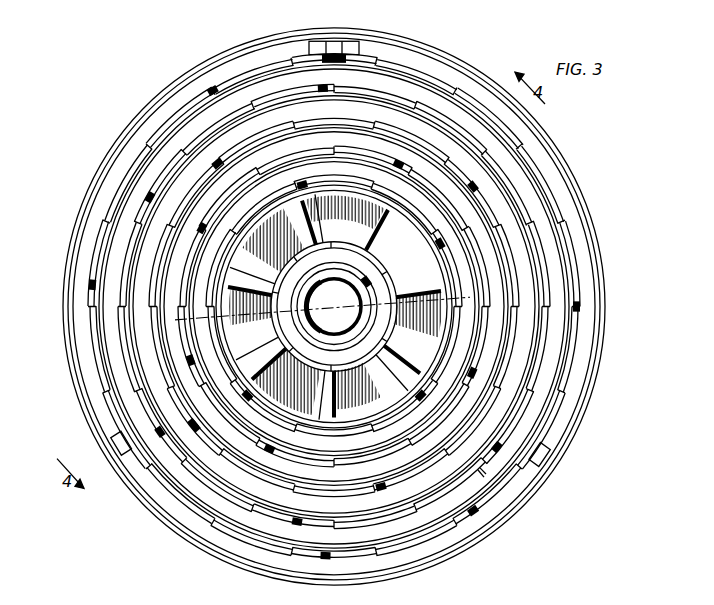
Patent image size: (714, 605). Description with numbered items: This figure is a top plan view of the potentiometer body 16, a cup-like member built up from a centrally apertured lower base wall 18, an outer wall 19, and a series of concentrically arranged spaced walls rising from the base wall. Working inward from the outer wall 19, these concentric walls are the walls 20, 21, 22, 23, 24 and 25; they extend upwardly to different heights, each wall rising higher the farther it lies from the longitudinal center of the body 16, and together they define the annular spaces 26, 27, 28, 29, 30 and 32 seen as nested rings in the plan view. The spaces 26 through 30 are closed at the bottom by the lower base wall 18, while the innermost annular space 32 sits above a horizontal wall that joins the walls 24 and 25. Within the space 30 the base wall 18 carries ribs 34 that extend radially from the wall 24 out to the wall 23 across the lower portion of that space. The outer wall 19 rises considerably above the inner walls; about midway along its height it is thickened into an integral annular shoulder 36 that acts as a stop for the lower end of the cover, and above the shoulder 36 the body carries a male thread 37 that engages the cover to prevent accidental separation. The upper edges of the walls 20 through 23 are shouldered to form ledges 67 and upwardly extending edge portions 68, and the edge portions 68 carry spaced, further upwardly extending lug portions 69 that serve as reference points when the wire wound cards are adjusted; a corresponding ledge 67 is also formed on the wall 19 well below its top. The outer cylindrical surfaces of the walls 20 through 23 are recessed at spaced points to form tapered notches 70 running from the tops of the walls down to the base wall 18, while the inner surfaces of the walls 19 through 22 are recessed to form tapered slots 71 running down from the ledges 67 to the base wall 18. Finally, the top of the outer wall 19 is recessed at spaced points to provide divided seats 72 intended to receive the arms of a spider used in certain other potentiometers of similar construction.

The body 16 is at (270, 54).
The lower base wall 18 is at (334, 312).
The outer wall 19 is at (373, 279).
The concentric wall 20 is at (372, 307).
The concentric wall 21 is at (378, 306).
The concentric wall 22 is at (340, 306).
The concentric wall 23 is at (364, 295).
The concentric wall 24 is at (358, 305).
The concentric wall 25 is at (356, 281).
The annular space 26 is at (369, 306).
The annular space 27 is at (364, 306).
The annular space 28 is at (354, 306).
The annular space 29 is at (349, 307).
The annular space 30 is at (354, 305).
The annular space 32 is at (334, 309).
The ribs 34 is at (319, 306).
The annular shoulder 36 is at (248, 108).
The male thread 37 is at (239, 120).
The ledges 67 is at (525, 490).
The upwardly extending edge portions 68 is at (516, 499).
The lug portions 69 is at (294, 308).
The notches 70 is at (307, 250).
The slots 71 is at (361, 322).
The divided seats 72 is at (336, 260).